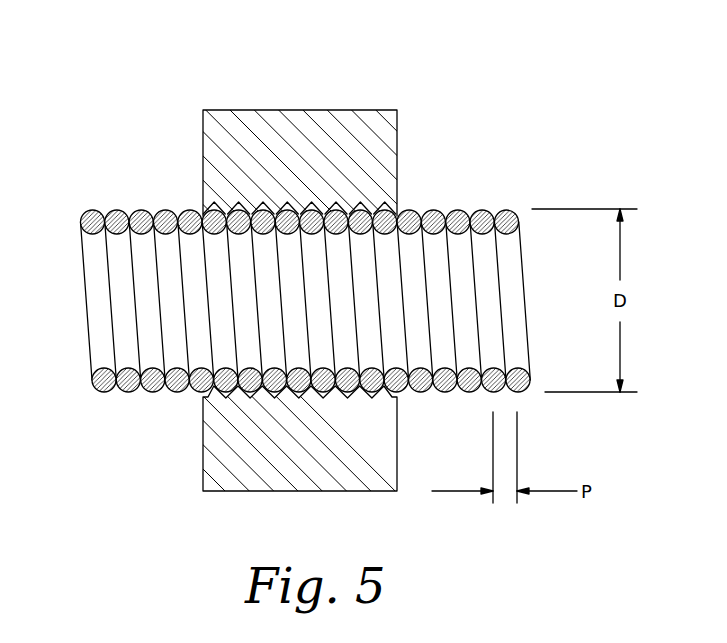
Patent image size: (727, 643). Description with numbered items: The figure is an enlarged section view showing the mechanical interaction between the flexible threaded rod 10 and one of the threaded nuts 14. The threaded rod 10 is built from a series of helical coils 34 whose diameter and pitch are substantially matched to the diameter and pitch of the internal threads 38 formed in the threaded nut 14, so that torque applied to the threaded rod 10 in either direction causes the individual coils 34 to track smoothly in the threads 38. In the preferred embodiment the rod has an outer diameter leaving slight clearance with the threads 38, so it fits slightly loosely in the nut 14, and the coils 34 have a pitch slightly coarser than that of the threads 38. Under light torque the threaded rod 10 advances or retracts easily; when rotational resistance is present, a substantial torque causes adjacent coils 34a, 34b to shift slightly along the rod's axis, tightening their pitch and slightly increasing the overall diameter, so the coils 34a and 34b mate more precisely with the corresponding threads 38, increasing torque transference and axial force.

The threaded rod 10 is at (85, 302).
The threaded nut 14 is at (397, 110).
The coils 34 is at (487, 210).
The adjacent coil 34a is at (166, 210).
The adjacent coil 34b is at (191, 210).
The internal threads 38 is at (396, 208).